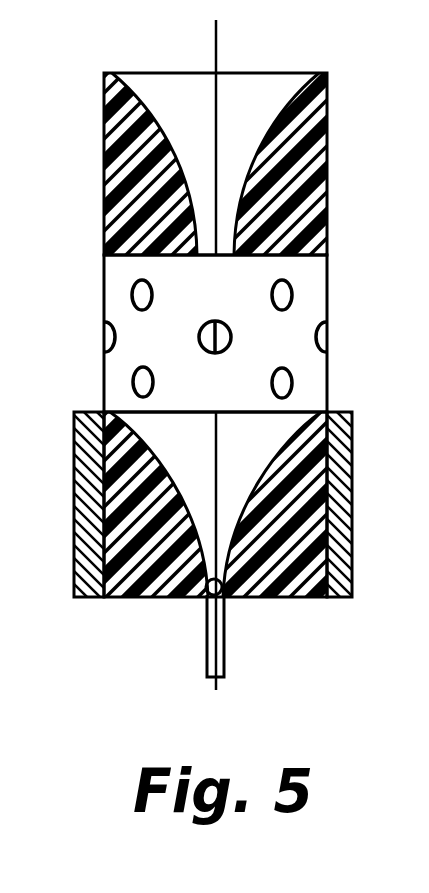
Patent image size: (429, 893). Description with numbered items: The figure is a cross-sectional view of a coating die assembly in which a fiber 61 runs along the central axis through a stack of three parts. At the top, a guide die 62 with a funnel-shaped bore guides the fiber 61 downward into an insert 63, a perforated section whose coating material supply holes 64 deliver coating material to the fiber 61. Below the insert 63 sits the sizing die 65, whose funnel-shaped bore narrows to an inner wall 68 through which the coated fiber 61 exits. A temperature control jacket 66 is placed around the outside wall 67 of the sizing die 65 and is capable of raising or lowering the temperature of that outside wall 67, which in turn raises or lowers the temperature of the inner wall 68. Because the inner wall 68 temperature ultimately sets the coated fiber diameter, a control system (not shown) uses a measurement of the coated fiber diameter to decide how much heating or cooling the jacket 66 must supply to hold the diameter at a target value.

The fiber 61 is at (216, 52).
The guide die 62 is at (313, 167).
The insert 63 is at (328, 383).
The coating material supply holes 64 is at (292, 295).
The sizing die 65 is at (288, 582).
The temperature control jacket 66 is at (328, 523).
The outside wall 67 is at (105, 545).
The inner wall 68 is at (208, 600).